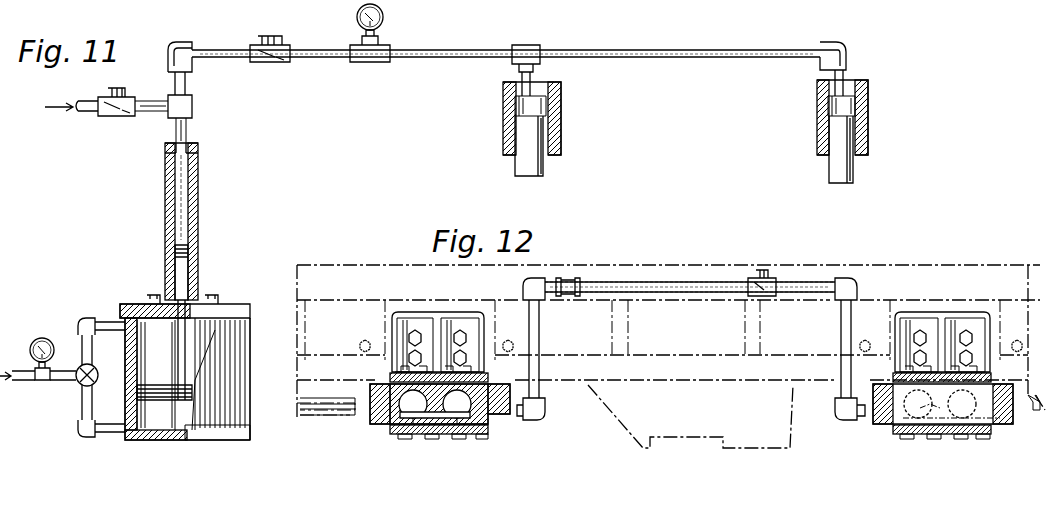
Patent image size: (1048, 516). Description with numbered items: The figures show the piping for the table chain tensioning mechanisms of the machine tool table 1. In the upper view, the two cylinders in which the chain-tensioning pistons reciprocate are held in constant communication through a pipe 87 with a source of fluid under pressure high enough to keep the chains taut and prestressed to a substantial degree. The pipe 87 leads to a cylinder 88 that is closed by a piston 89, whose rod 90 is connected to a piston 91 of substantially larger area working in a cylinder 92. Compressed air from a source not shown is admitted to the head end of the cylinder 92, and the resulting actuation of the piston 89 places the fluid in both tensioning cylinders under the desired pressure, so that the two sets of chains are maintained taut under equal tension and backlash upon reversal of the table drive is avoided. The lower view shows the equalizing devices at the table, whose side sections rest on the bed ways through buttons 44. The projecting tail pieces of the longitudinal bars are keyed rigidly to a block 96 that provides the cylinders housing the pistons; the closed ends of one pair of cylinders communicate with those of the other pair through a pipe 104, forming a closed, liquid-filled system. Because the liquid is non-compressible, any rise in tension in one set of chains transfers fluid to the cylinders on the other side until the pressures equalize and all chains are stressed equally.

In FIG. 12, the heat exchanger assembly 1 is at (617, 265).
In FIG. 12, the button 44 is at (318, 412).
In FIG. 11, the pipe 87 is at (568, 48).
In FIG. 11, the cylinder 88 is at (180, 183).
In FIG. 11, the piston 89 is at (178, 268).
In FIG. 11, the piston rod 90 is at (197, 298).
In FIG. 11, the piston 91 is at (140, 392).
In FIG. 11, the cylinder 92 is at (141, 356).
In FIG. 12, the block 96 is at (488, 392).
In FIG. 12, the pipe 104 is at (718, 283).